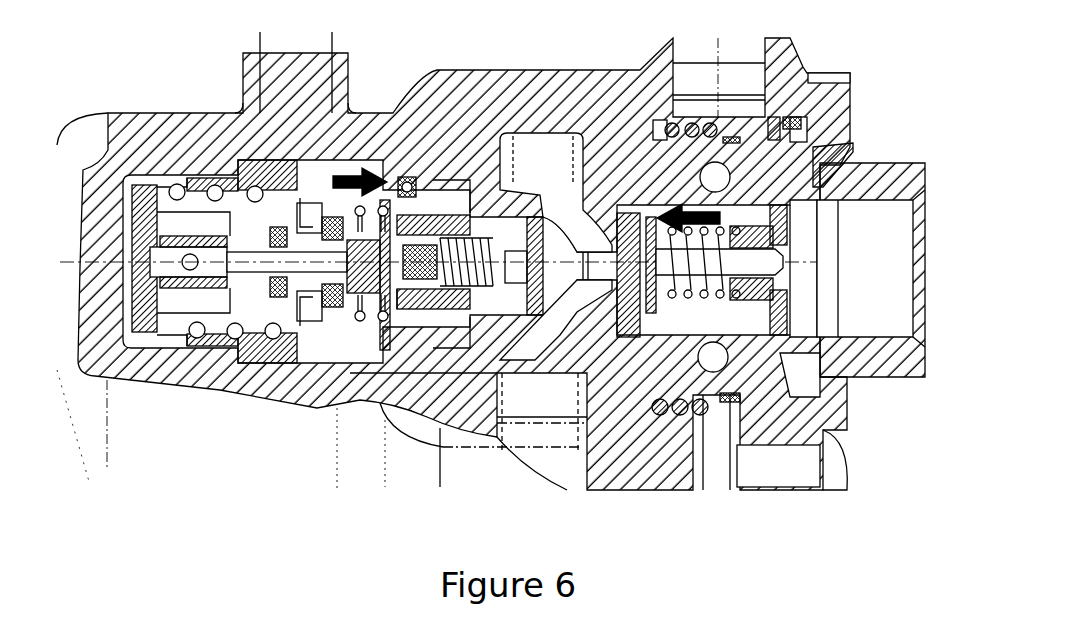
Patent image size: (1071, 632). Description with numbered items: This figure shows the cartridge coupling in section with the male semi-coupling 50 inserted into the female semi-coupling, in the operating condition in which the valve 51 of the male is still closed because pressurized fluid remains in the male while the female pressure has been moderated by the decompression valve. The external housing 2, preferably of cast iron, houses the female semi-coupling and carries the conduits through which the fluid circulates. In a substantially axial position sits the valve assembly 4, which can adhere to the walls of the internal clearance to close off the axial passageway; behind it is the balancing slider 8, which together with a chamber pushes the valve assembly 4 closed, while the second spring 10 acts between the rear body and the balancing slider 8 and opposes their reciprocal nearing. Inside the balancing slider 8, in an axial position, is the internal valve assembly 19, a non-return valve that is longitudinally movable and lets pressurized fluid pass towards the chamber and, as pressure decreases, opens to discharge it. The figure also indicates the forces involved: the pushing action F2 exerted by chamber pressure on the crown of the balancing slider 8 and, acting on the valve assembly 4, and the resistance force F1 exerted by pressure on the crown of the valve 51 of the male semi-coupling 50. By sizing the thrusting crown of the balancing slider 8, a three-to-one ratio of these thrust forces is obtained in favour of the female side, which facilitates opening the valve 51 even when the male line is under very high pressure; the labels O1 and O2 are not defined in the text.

The external housing 2 is at (607, 97).
The valve assembly 4 is at (568, 222).
The balancing slider 8 is at (414, 186).
The second spring 10 is at (322, 348).
The internal valve assembly 19 is at (416, 236).
The male semi-coupling 50 is at (889, 150).
The valve 51 is at (606, 285).
The resistance force F1 is at (684, 206).
The pushing action F2 is at (347, 176).
The orifice O1 is at (516, 267).
The orifice O2 is at (412, 301).